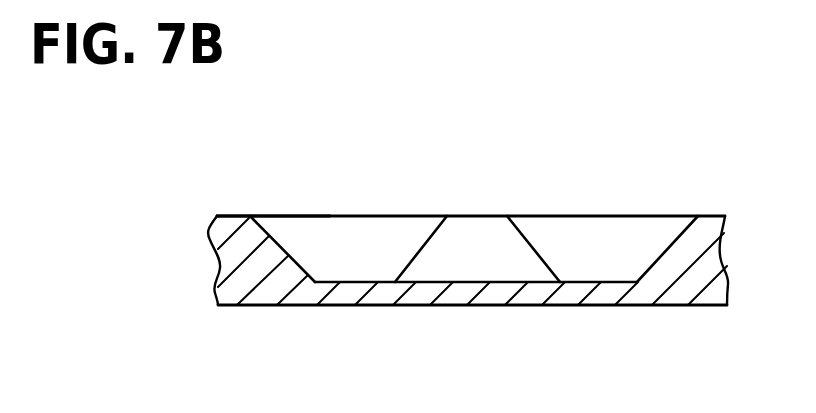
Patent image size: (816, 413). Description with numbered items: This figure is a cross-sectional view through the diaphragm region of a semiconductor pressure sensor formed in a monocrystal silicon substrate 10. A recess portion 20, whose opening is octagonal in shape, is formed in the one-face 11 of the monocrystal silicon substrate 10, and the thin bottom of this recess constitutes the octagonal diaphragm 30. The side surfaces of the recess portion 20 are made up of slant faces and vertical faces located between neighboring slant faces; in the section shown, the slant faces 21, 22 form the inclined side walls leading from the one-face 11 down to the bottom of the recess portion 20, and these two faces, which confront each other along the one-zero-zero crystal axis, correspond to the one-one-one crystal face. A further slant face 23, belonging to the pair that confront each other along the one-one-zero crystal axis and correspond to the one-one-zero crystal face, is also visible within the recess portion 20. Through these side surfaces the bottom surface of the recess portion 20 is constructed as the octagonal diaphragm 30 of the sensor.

The monocrystal silicon substrate 10 is at (710, 235).
The one-face of the monocrystal silicon substrate 11 is at (247, 217).
The recess portion 20 is at (583, 280).
The slant face 21 is at (283, 255).
The slant face 22 is at (660, 260).
The slant face 23 is at (470, 238).
The diaphragm 30 is at (468, 305).